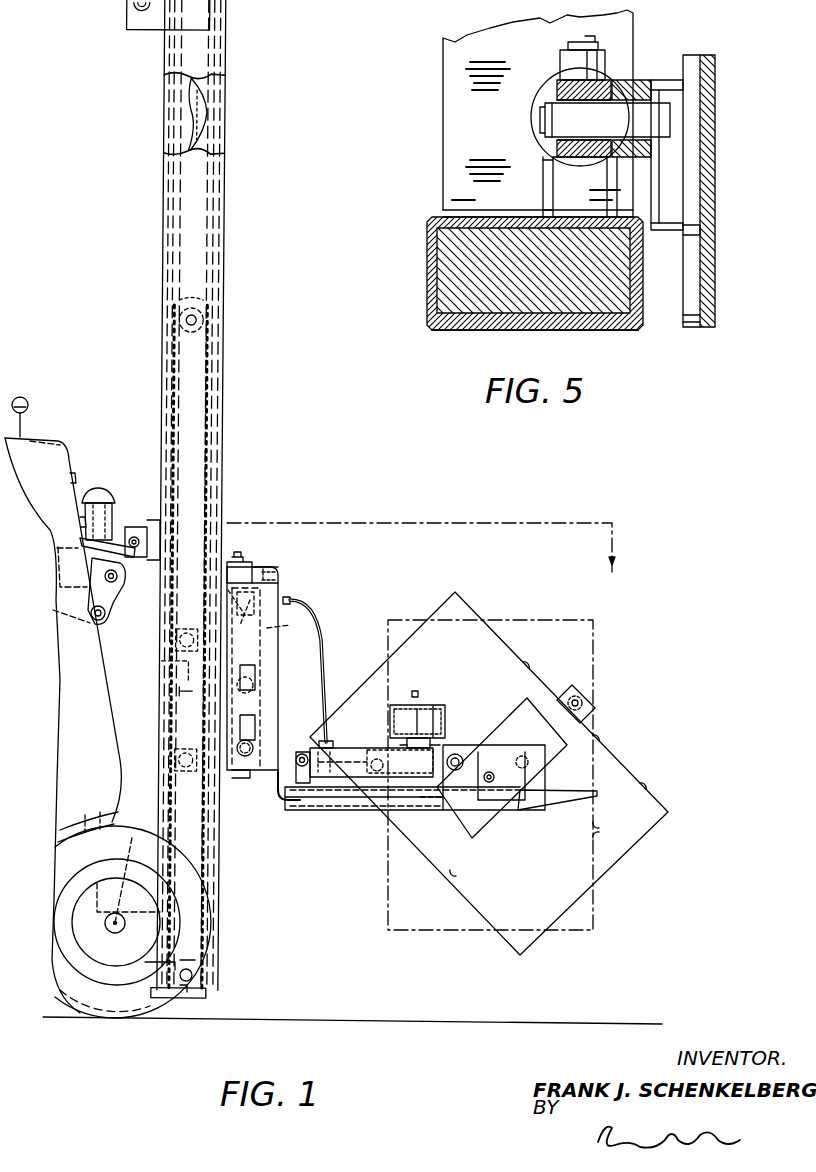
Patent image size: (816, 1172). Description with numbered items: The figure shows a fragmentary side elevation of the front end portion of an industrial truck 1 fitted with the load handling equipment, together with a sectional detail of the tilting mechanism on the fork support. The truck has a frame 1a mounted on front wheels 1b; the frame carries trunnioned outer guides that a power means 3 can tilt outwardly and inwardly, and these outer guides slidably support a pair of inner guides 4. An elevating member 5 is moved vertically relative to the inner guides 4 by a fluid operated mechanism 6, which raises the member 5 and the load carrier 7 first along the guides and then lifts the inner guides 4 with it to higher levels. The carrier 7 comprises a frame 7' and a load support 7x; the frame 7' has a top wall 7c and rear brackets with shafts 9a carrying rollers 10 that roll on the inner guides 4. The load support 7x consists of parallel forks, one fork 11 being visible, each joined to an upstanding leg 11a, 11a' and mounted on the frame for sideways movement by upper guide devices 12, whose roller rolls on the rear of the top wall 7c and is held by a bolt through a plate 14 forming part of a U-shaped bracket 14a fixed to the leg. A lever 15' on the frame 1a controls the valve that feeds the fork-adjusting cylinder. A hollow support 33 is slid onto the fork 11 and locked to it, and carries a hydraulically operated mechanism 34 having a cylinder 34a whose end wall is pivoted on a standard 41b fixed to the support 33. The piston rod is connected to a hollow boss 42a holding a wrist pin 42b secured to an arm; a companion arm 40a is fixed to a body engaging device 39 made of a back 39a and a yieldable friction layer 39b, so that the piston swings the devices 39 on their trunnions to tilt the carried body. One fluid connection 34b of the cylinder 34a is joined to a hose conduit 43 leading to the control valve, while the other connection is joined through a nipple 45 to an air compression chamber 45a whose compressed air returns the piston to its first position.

In FIG. 1, the industrial truck front end portion 1 is at (219, 963).
In FIG. 1, the frame 1a is at (78, 812).
In FIG. 1, the front wheels 1b is at (88, 997).
In FIG. 1, the power means 3 is at (124, 643).
In FIG. 1, the inner guides 4 is at (181, 103).
In FIG. 1, the elevating member 5 is at (170, 693).
In FIG. 1, the fluid operated mechanism 6 is at (197, 492).
In FIG. 1, the load carrier 7 is at (266, 683).
In FIG. 1, the top wall 7c is at (272, 574).
In FIG. 1, the frame 7' is at (293, 575).
In FIG. 1, the load support 7x is at (437, 829).
In FIG. 1, the shafts 9a is at (160, 612).
In FIG. 1, the rollers 10 is at (168, 671).
In FIG. 1, the fork 11 is at (563, 798).
In FIG. 5, the fork 11 is at (455, 262).
In FIG. 1, the upstanding leg 11a is at (323, 612).
In FIG. 5, the upstanding leg 11a' is at (515, 113).
In FIG. 1, the upper guide devices 12 is at (240, 555).
In FIG. 1, the plate 14 is at (257, 567).
In FIG. 1, the U-shaped bracket 14a is at (253, 620).
In FIG. 1, the lever 15' is at (46, 412).
In FIG. 1, the support 33 is at (312, 790).
In FIG. 5, the support 33 is at (450, 323).
In FIG. 1, the hydraulically operated mechanism 34 is at (368, 737).
In FIG. 1, the cylinder 34a is at (333, 772).
In FIG. 5, the cylinder 34a is at (584, 166).
In FIG. 5, the fluid connection 34b is at (563, 62).
In FIG. 5, the body engaging device 39 is at (757, 139).
In FIG. 5, the back 39a is at (692, 318).
In FIG. 5, the friction material layer 39b is at (712, 231).
In FIG. 5, the arm 40a is at (666, 232).
In FIG. 5, the standard 41b is at (556, 187).
In FIG. 5, the hollow boss 42a is at (542, 147).
In FIG. 5, the wrist pin 42b is at (646, 79).
In FIG. 1, the fluid conduit 43 is at (326, 652).
In FIG. 5, the nipple 45 is at (603, 40).
In FIG. 1, the air compression chamber 45a is at (433, 704).